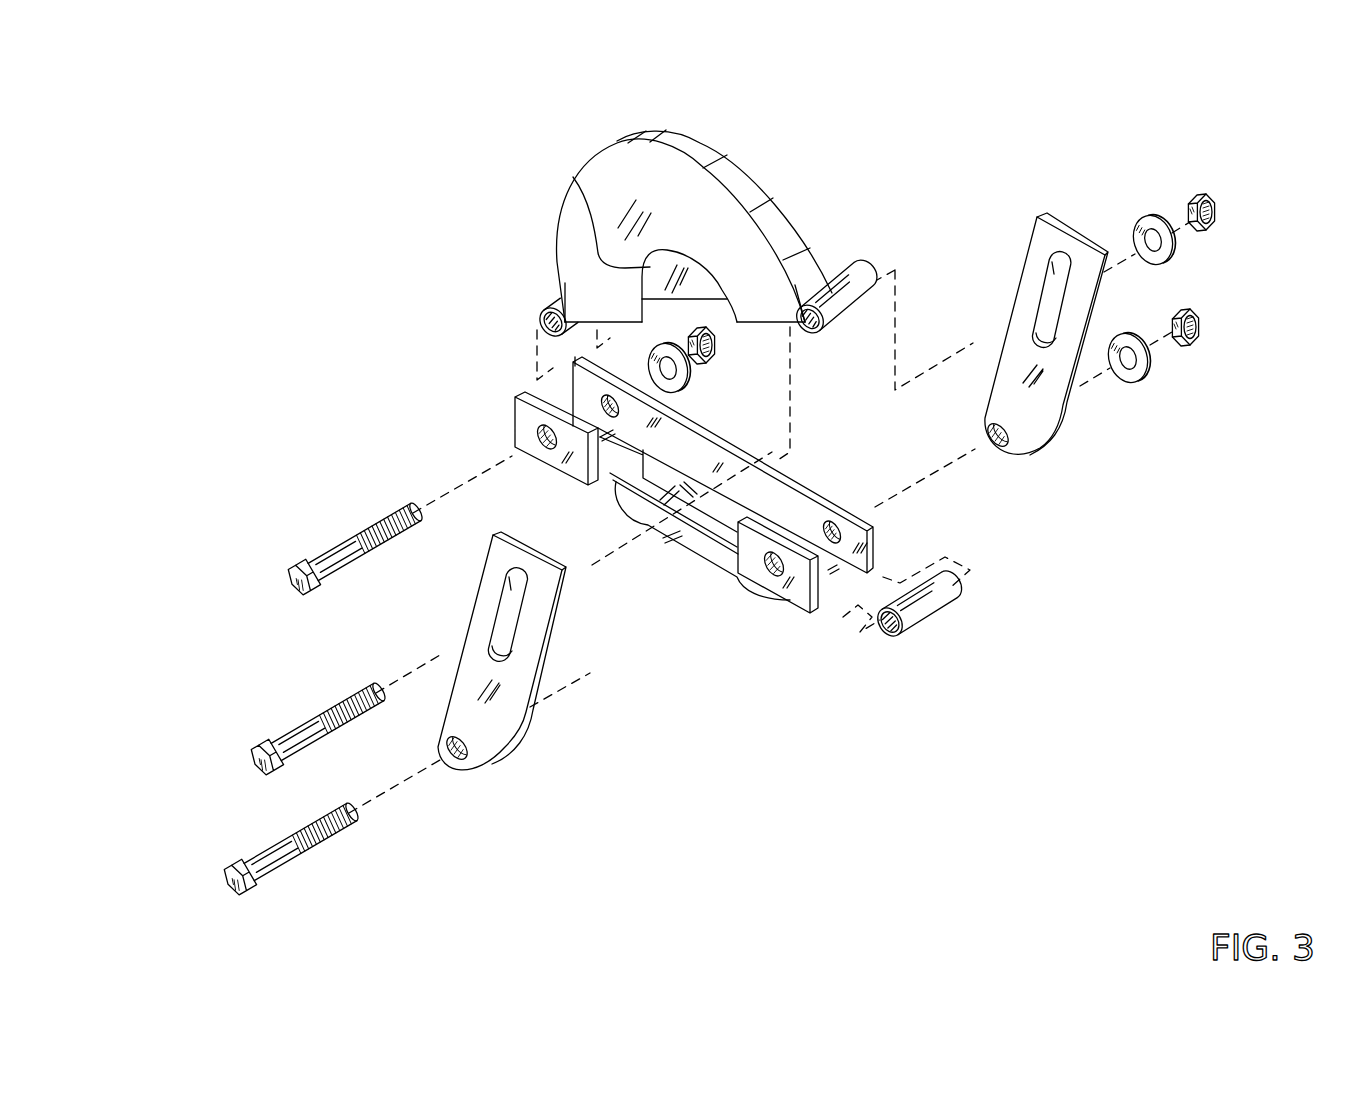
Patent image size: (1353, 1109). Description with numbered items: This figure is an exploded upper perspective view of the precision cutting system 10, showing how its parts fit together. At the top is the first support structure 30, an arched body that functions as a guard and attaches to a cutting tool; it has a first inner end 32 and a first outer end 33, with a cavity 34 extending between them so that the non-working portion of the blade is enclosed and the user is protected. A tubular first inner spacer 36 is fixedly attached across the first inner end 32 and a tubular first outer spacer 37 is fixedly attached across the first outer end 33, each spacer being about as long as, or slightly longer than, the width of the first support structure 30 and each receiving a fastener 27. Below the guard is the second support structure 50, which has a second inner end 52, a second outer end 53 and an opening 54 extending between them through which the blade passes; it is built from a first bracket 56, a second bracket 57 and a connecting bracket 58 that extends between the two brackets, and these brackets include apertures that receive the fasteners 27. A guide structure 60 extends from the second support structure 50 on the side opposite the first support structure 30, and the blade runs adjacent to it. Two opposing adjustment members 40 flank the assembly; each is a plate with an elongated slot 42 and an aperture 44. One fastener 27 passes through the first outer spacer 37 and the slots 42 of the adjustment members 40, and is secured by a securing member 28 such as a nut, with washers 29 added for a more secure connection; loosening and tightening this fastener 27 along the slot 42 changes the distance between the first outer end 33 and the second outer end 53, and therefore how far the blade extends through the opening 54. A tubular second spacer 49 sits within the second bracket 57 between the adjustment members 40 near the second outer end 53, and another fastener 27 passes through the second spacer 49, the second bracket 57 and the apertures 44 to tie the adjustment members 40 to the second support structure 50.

The precision cutting system 10 is at (237, 196).
The fastener 27 is at (325, 550).
The securing member 28 is at (712, 352).
The washer 29 is at (684, 384).
The first support structure 30 is at (714, 140).
The first inner end 32 is at (565, 283).
The first outer end 33 is at (830, 263).
The cavity 34 is at (560, 175).
The first inner spacer 36 is at (543, 322).
The first outer spacer 37 is at (866, 276).
The adjustment member 40 is at (533, 716).
The slot 42 is at (503, 597).
The aperture 44 is at (470, 758).
The second spacer 49 is at (940, 612).
The second support structure 50 is at (827, 613).
The second inner end 52 is at (515, 420).
The second outer end 53 is at (866, 549).
The opening 54 is at (632, 486).
The first bracket 56 is at (575, 472).
The second bracket 57 is at (802, 597).
The connecting bracket 58 is at (803, 485).
The guide structure 60 is at (696, 575).